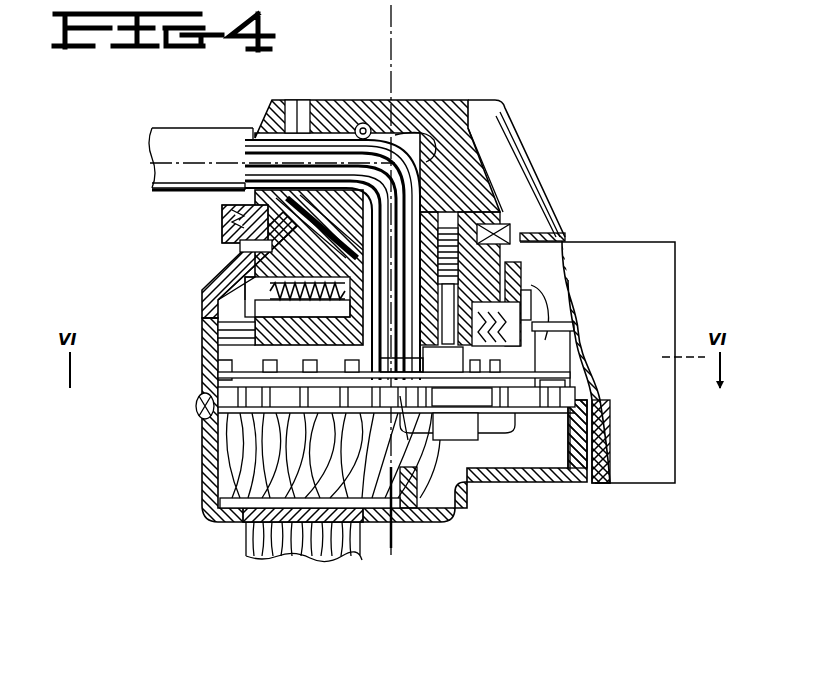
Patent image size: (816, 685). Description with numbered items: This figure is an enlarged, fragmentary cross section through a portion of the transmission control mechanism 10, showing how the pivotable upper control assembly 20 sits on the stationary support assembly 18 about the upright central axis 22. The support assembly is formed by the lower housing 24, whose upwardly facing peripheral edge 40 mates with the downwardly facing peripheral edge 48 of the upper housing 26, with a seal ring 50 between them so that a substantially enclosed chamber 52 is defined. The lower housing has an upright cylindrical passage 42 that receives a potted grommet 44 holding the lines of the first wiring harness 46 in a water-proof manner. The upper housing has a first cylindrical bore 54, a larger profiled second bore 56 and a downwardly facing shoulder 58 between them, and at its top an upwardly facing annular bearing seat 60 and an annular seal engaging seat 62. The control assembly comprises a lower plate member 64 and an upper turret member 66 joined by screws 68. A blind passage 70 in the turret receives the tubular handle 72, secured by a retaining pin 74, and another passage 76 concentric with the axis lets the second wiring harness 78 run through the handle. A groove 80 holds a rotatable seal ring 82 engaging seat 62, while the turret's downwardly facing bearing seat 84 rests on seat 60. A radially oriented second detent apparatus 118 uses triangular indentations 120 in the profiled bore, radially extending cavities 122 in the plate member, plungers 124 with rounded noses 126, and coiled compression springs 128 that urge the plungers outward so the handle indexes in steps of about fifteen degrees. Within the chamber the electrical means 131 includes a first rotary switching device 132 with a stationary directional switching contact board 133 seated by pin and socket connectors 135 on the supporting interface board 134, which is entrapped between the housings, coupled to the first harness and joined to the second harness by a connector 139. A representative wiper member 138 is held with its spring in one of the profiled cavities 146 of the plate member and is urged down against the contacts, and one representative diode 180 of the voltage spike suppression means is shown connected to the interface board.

The transmission control mechanism 10 is at (613, 131).
The support assembly 18 is at (198, 462).
The upper control assembly 20 is at (266, 107).
The central axis 22 is at (396, 37).
The lower housing 24 is at (219, 501).
The upper housing 26 is at (208, 289).
The upwardly facing peripheral edge 40 is at (217, 394).
The upright cylindrical passage 42 is at (244, 521).
The potted grommet 44 is at (393, 540).
The first wiring harness 46 is at (366, 552).
The downwardly facing peripheral edge 48 is at (594, 407).
The seal ring 50 is at (203, 420).
The enclosed chamber 52 is at (528, 459).
The first cylindrical bore 54 is at (258, 247).
The second peripherally profiled cylindrical bore 56 is at (522, 298).
The downwardly facing shoulder 58 is at (528, 303).
The upwardly facing annular bearing seat 60 is at (506, 228).
The annular seal engaging seat 62 is at (528, 236).
The lower plate member 64 is at (548, 308).
The upper turret member 66 is at (506, 118).
The fasteners or screws 68 is at (462, 394).
The blind cylindrical passage 70 is at (365, 122).
The tubular handle or first control member 72 is at (158, 130).
The retaining pin 74 is at (291, 118).
The cylindrical passage 76 is at (430, 216).
The second wiring harness 78 is at (430, 125).
The annular downwardly facing groove 80 is at (230, 224).
The seal ring 82 is at (244, 211).
The downwardly facing bearing seat 84 is at (514, 243).
The second detent apparatus 118 is at (278, 318).
The triangularly shaped indentations 120 is at (203, 322).
The radially extending cavities 122 is at (236, 327).
The plunger 124 is at (258, 272).
The semi-cylindrically rounded nose 126 is at (232, 306).
The coiled compression springs 128 is at (343, 348).
The electrical means 131 is at (513, 427).
The first rotary type switching device 132 is at (552, 364).
The directional switching contact board 133 is at (526, 384).
The supporting interface board 134 is at (550, 420).
The pin and socket type connectors 135 is at (229, 378).
The wiper member 138 is at (566, 350).
The connector 139 is at (409, 426).
The profiled cavities 146 is at (562, 335).
The diode 180 is at (441, 437).